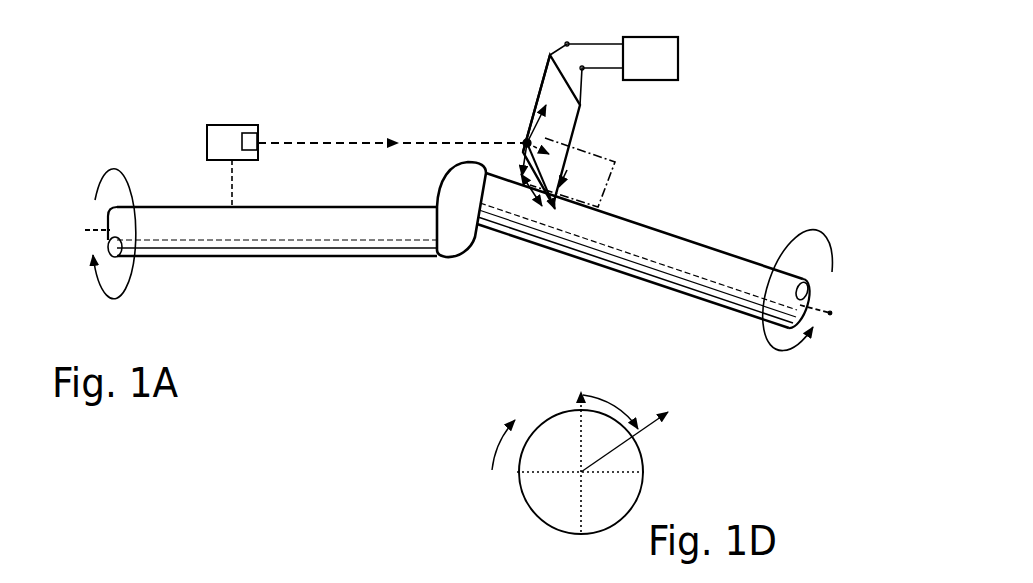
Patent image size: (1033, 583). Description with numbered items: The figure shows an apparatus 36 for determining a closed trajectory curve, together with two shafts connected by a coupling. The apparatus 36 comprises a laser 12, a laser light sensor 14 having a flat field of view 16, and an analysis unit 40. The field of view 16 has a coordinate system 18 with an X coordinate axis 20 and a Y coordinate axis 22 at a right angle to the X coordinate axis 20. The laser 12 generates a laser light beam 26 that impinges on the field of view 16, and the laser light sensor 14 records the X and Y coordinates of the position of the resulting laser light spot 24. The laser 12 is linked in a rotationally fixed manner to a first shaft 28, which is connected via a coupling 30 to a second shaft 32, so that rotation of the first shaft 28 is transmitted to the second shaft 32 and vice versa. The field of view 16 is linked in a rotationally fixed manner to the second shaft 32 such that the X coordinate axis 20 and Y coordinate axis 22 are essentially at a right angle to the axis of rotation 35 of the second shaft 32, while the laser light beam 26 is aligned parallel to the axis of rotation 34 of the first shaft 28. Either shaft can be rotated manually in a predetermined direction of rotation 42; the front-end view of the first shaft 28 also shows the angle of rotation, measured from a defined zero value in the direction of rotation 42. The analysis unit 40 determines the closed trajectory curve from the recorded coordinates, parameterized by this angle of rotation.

In FIG. 1A, the laser 12 is at (207, 145).
In FIG. 1A, the laser light sensor 14 is at (586, 127).
In FIG. 1A, the field of view 16 is at (547, 85).
In FIG. 1A, the coordinate system 18 is at (548, 137).
In FIG. 1A, the X coordinate axis 20 is at (523, 141).
In FIG. 1A, the Y coordinate axis 22 is at (543, 113).
In FIG. 1A, the laser light spot 24 is at (520, 146).
In FIG. 1A, the laser light beam 26 is at (345, 143).
In FIG. 1A, the first shaft 28 is at (290, 232).
In FIG. 1D, the first shaft 28 is at (552, 500).
In FIG. 1A, the coupling 30 is at (470, 247).
In FIG. 1A, the second shaft 32 is at (655, 282).
In FIG. 1A, the axis of rotation of the first shaft 34 is at (85, 230).
In FIG. 1A, the axis of rotation of the second shaft 35 is at (826, 308).
In FIG. 1A, the apparatus 36 is at (104, 112).
In FIG. 1A, the analysis unit 40 is at (665, 57).
In FIG. 1A, the direction of rotation 42 is at (118, 297).
In FIG. 1D, the direction of rotation 42 is at (492, 450).